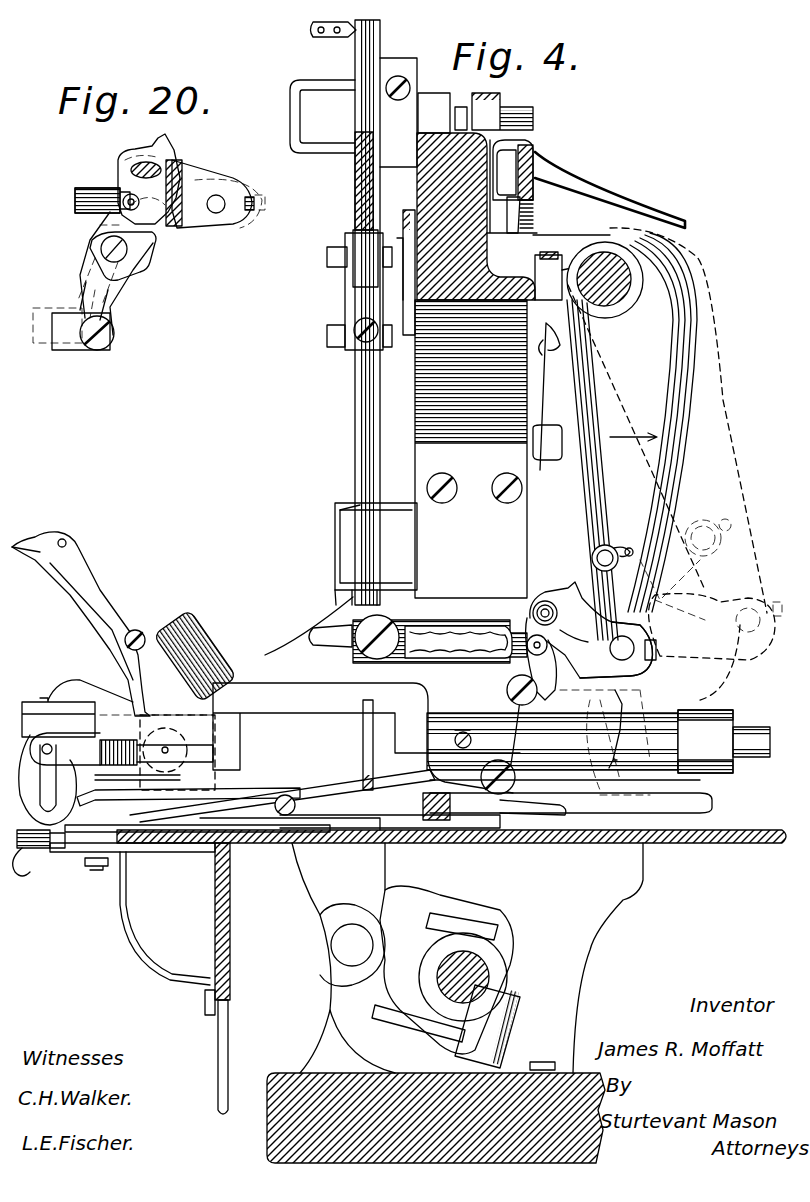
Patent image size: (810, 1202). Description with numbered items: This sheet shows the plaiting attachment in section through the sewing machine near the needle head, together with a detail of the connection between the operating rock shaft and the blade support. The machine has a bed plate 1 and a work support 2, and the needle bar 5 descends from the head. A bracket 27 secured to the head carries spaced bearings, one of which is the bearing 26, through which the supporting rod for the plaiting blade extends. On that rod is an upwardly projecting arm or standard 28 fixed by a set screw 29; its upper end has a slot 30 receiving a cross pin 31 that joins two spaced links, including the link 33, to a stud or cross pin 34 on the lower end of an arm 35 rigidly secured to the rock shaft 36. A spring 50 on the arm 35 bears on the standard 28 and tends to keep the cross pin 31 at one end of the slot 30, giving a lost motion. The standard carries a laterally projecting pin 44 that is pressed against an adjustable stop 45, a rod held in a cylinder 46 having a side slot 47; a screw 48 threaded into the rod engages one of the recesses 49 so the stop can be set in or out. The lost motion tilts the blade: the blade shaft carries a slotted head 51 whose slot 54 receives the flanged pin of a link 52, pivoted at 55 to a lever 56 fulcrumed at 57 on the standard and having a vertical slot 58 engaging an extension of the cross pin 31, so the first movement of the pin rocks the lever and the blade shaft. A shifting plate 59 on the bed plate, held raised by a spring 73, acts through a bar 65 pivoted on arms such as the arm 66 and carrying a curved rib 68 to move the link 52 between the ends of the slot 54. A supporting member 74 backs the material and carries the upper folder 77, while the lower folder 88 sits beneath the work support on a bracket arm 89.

In FIG. 4, the bed plate 1 is at (285, 1090).
In FIG. 4, the work support 2 is at (718, 845).
In FIG. 4, the needle bar 5 is at (357, 392).
In FIG. 4, the bearing 26 is at (705, 725).
In FIG. 4, the bracket 27 is at (550, 345).
In FIG. 20, the arm or standard 28 is at (140, 264).
In FIG. 4, the arm or standard 28 is at (466, 730).
In FIG. 4, the set screw 29 is at (482, 775).
In FIG. 20, the slot 30 is at (162, 165).
In FIG. 20, the cross pin 31 is at (135, 166).
In FIG. 4, the cross pin 31 is at (548, 603).
In FIG. 20, the link 33 is at (215, 211).
In FIG. 4, the link 33 is at (616, 650).
In FIG. 20, the stud or cross pin 34 is at (222, 198).
In FIG. 4, the stud or cross pin 34 is at (632, 645).
In FIG. 4, the arm 35 is at (660, 437).
In FIG. 4, the shaft 36 is at (620, 265).
In FIG. 20, the pin 44 is at (124, 207).
In FIG. 4, the pin 44 is at (545, 652).
In FIG. 20, the adjustable stop 45 is at (107, 191).
In FIG. 4, the adjustable stop 45 is at (537, 634).
In FIG. 4, the cylinder 46 is at (440, 630).
In FIG. 4, the slot 47 is at (460, 640).
In FIG. 4, the screw 48 is at (370, 628).
In FIG. 4, the recesses 49 is at (420, 628).
In FIG. 4, the spring 50 is at (592, 555).
In FIG. 4, the slotted head 51 is at (115, 761).
In FIG. 20, the link 52 is at (70, 352).
In FIG. 4, the link 52 is at (237, 690).
In FIG. 4, the slot 54 is at (55, 785).
In FIG. 20, the pivot 55 is at (108, 345).
In FIG. 4, the pivot 55 is at (520, 810).
In FIG. 20, the lever 56 is at (108, 300).
In FIG. 4, the lever 56 is at (518, 726).
In FIG. 4, the fulcrum 57 is at (507, 692).
In FIG. 4, the slot 58 is at (589, 641).
In FIG. 4, the shifting plate 59 is at (188, 802).
In FIG. 4, the bar 65 is at (330, 790).
In FIG. 4, the arm 66 is at (737, 770).
In FIG. 4, the curved rib 68 is at (705, 808).
In FIG. 4, the spring 73 is at (205, 838).
In FIG. 4, the supporting member 74 is at (131, 735).
In FIG. 4, the folder 77 is at (178, 640).
In FIG. 4, the lower folder 88 is at (60, 858).
In FIG. 4, the bracket arm 89 is at (165, 978).